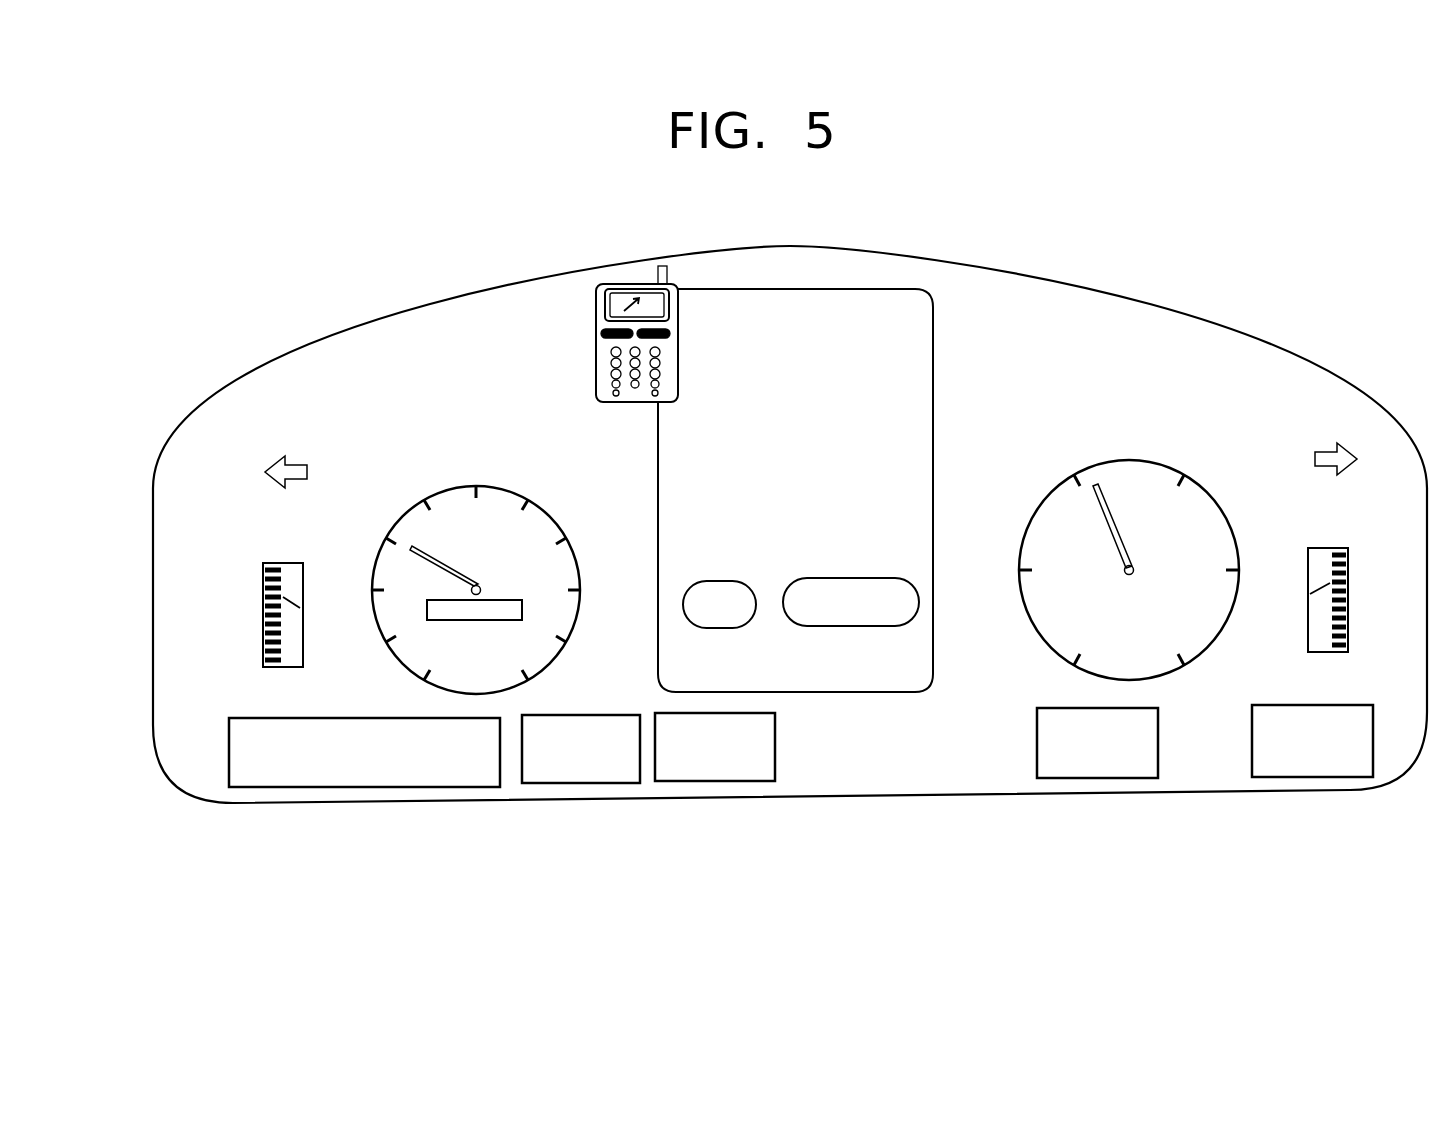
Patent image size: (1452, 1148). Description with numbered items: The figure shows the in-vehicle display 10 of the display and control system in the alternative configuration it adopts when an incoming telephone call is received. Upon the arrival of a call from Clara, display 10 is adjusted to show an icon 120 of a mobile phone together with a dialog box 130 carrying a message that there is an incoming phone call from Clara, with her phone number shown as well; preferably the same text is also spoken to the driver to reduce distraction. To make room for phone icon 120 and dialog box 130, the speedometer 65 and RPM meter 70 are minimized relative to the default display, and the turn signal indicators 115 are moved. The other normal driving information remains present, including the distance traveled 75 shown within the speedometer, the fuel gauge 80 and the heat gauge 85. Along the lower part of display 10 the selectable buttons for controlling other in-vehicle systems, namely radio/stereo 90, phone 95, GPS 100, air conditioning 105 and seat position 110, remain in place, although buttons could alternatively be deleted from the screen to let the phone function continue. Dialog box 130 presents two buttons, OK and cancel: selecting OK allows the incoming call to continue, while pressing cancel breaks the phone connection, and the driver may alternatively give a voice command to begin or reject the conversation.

The display 10 is at (1193, 313).
The speedometer 65 is at (545, 512).
The RPM meter 70 is at (1092, 422).
The distance traveled 75 is at (522, 606).
The fuel gauge 80 is at (1350, 590).
The heat gauge 85 is at (265, 585).
The radio/stereo button 90 is at (325, 778).
The phone button 95 is at (575, 777).
The GPS button 100 is at (712, 775).
The air conditioning (AC) button 105 is at (1095, 768).
The seat position button 110 is at (1297, 766).
The turn signal indicators 115 is at (352, 474).
The mobile phone icon 120 is at (600, 284).
The dialog box 130 is at (933, 556).